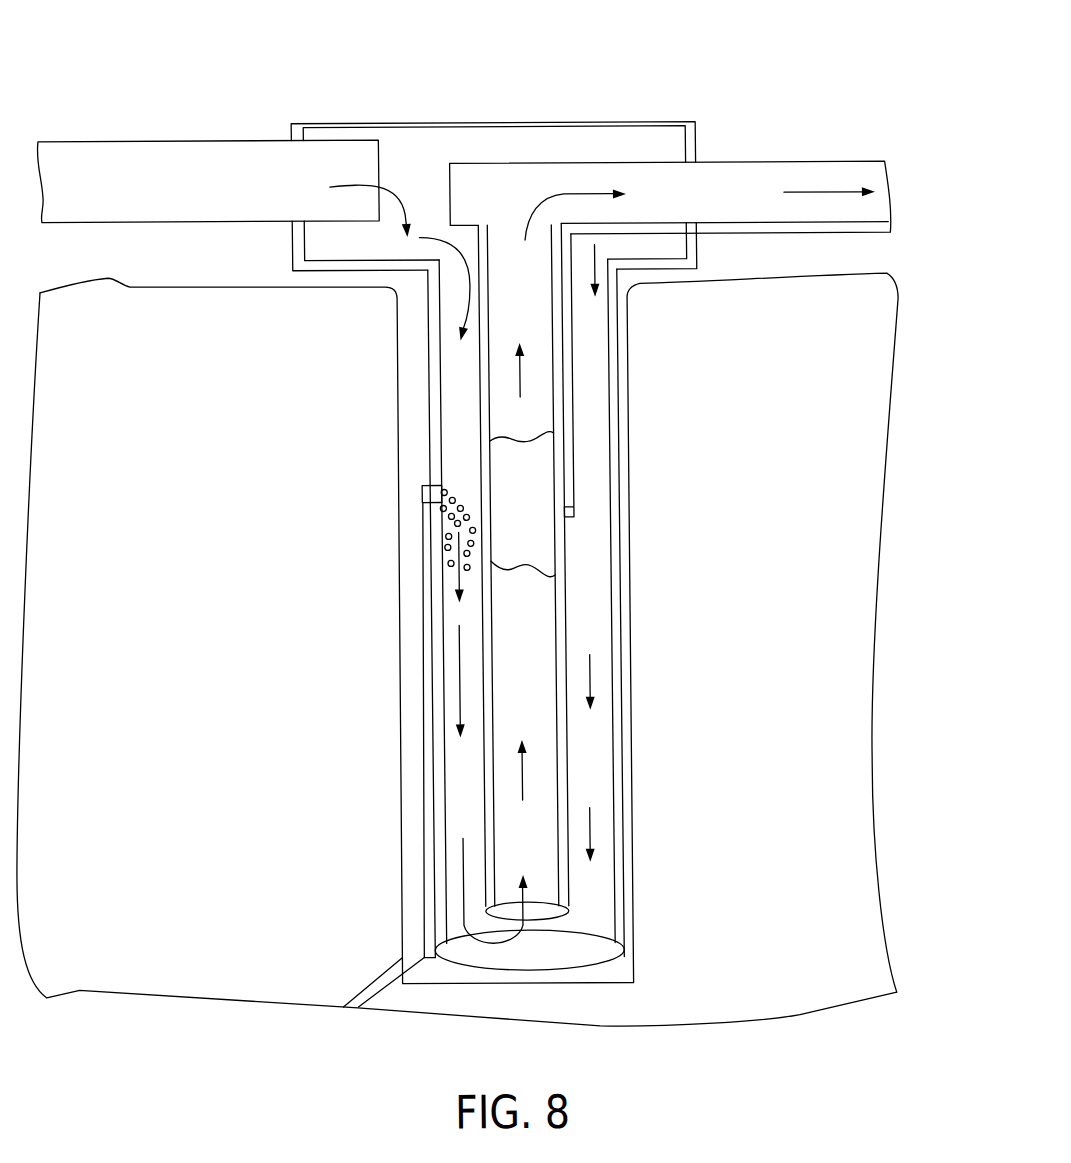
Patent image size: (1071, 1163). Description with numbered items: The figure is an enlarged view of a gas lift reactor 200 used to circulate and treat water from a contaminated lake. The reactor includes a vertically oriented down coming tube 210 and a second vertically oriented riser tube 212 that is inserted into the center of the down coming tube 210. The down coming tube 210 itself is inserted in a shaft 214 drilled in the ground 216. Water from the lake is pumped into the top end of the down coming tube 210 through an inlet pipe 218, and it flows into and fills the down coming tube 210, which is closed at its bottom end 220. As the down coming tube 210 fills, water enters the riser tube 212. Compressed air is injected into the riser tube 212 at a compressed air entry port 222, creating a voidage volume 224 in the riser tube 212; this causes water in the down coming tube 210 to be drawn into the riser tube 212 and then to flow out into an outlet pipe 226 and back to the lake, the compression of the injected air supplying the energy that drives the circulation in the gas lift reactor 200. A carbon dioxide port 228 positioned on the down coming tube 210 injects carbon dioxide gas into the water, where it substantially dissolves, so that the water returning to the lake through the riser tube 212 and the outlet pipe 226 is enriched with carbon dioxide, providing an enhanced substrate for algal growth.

The gas lift reactor 200 is at (696, 70).
The down coming tube 210 is at (434, 381).
The riser tube 212 is at (481, 419).
The shaft 214 is at (396, 511).
The ground 216 is at (103, 296).
The inlet pipe 218 is at (167, 158).
The bottom end 220 is at (572, 952).
The compressed air entry port 222 is at (573, 517).
The voidage volume 224 is at (533, 470).
The outlet pipe 226 is at (757, 179).
The carbon dioxide port 228 is at (430, 510).